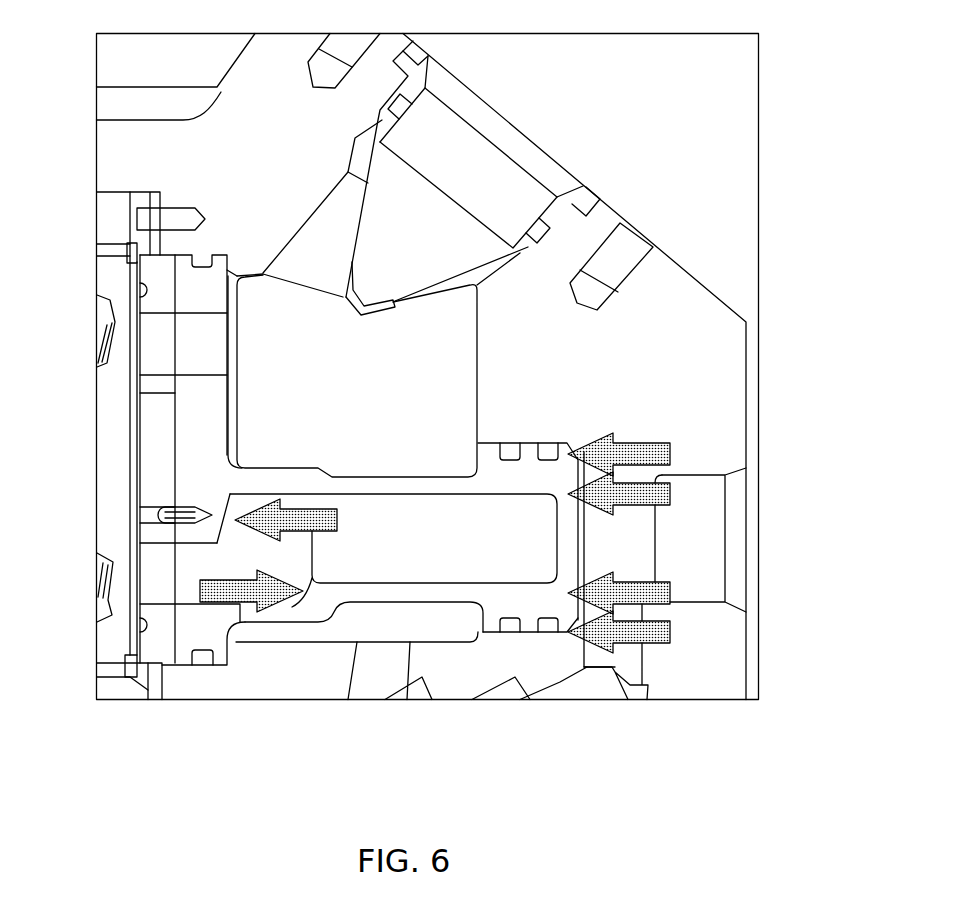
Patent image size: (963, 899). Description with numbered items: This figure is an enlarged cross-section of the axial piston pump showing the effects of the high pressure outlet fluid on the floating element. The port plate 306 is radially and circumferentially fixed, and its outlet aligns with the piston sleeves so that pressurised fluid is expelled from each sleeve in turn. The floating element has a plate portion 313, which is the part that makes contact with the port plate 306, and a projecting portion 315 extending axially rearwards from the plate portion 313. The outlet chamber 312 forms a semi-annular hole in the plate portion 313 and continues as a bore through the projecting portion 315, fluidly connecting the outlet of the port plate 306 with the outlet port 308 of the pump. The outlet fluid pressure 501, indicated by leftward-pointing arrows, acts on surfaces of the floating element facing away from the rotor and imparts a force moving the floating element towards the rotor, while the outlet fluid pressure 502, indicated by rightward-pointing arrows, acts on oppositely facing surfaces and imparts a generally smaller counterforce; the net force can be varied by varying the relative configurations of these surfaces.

The port plate 306 is at (157, 635).
The outlet port 308 is at (707, 535).
The outlet chamber 312 is at (448, 558).
The plate portion 313 is at (195, 282).
The projecting portion 315 is at (518, 478).
The outlet fluid pressure 501 is at (232, 513).
The outlet fluid pressure 502 is at (265, 605).